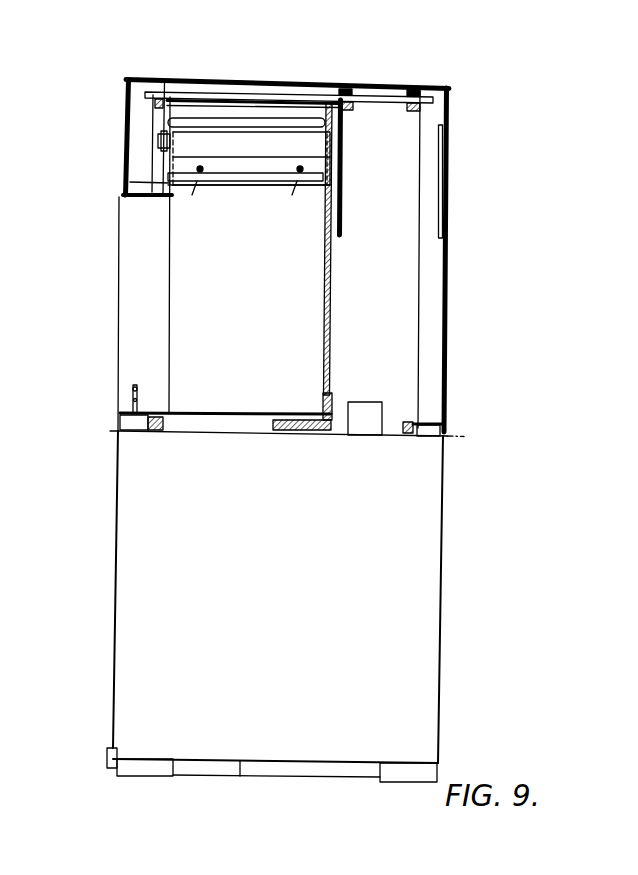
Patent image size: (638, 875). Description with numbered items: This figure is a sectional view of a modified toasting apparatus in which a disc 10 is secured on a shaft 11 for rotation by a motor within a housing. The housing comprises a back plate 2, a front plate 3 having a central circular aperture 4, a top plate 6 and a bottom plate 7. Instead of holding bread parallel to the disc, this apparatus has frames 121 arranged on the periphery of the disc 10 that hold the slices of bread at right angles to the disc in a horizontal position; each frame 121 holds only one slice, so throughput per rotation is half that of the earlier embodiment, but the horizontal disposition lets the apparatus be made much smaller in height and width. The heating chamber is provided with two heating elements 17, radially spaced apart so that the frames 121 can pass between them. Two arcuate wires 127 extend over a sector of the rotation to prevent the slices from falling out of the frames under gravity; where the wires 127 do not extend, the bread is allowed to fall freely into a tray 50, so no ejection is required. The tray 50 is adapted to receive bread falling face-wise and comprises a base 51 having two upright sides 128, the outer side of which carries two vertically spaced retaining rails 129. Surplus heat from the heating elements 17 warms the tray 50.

The back plate 2 is at (447, 284).
The front plate 3 is at (113, 682).
The central circular aperture 4 is at (130, 196).
The top plate 6 is at (150, 77).
The bottom plate 7 is at (238, 766).
The disc 10 is at (332, 268).
The shaft 11 is at (232, 432).
The heating elements 17 is at (162, 108).
The tray 50 is at (98, 410).
The base 51 is at (237, 412).
The frames 121 is at (305, 146).
The arcuate wires 127 is at (198, 186).
The upright sides 128 is at (126, 391).
The retaining rails 129 is at (137, 400).